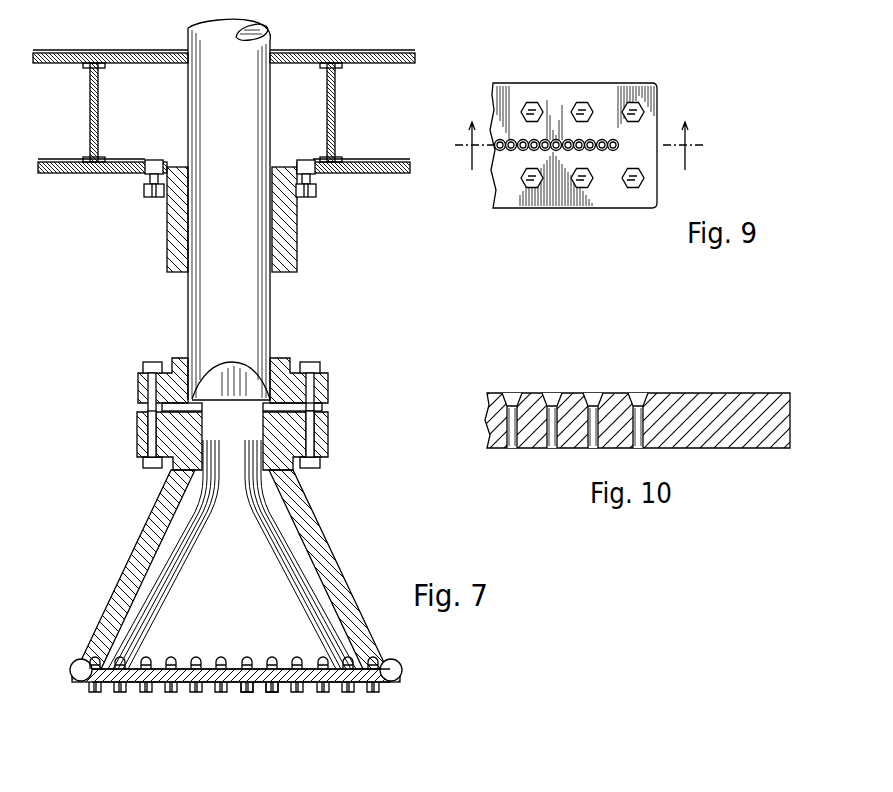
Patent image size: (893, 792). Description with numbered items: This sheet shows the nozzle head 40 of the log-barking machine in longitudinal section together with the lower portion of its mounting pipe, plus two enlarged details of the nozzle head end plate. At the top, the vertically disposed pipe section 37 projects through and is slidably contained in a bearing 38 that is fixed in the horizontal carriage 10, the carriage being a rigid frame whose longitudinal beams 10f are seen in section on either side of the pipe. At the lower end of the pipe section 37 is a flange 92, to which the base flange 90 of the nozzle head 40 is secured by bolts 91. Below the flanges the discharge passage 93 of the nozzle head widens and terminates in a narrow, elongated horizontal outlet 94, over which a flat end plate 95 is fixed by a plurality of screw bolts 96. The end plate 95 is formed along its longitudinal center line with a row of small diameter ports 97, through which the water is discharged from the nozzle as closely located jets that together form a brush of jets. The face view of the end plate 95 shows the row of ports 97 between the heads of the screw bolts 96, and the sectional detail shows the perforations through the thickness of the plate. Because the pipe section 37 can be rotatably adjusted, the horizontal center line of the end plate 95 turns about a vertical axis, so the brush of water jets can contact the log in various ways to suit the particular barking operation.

In FIG. 7, the carriage 10 is at (356, 45).
In FIG. 9, the carriage 10 is at (580, 146).
In FIG. 7, the longitudinal beams 10f is at (90, 110).
In FIG. 7, the pipe section 37 is at (197, 112).
In FIG. 7, the bearing 38 is at (167, 220).
In FIG. 7, the nozzle head 40 is at (138, 521).
In FIG. 7, the base flange 90 is at (140, 437).
In FIG. 7, the bolts 91 is at (160, 408).
In FIG. 7, the flange 92 is at (143, 373).
In FIG. 7, the discharge passage 93 is at (187, 587).
In FIG. 7, the outlet 94 is at (187, 658).
In FIG. 7, the end plate 95 is at (122, 690).
In FIG. 9, the end plate 95 is at (515, 193).
In FIG. 10, the end plate 95 is at (720, 437).
In FIG. 7, the screw bolts 96 is at (323, 692).
In FIG. 9, the screw bolts 96 is at (587, 187).
In FIG. 9, the ports 97 is at (532, 152).
In FIG. 10, the ports 97 is at (597, 432).